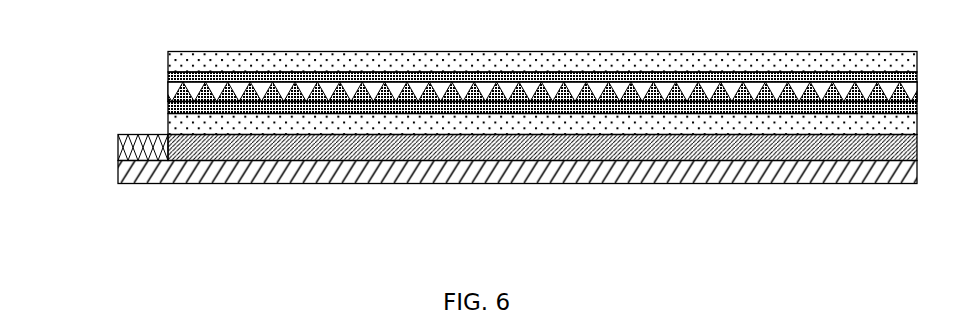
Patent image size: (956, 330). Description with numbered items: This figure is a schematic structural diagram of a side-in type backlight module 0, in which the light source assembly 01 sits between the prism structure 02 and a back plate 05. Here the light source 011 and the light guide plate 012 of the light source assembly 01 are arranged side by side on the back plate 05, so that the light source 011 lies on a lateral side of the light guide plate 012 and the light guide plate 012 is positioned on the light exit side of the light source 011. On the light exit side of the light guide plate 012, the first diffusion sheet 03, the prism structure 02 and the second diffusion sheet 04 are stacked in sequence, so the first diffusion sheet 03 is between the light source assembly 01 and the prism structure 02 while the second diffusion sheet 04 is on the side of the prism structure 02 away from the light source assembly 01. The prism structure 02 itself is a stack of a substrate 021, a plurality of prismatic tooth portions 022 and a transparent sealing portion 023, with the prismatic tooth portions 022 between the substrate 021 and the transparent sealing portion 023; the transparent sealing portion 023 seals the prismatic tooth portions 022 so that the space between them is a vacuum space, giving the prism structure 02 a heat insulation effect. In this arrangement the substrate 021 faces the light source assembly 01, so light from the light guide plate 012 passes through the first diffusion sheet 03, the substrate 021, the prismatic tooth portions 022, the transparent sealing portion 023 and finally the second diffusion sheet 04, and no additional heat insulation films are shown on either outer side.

The backlight module 0 is at (485, 145).
The light source assembly 01 is at (517, 199).
The light source 011 is at (146, 154).
The light guide plate 012 is at (193, 151).
The prism structure 02 is at (486, 87).
The substrate 021 is at (168, 107).
The prismatic tooth portions 022 is at (175, 93).
The transparent sealing portion 023 is at (168, 77).
The first diffusion sheet 03 is at (168, 126).
The second diffusion sheet 04 is at (168, 62).
The back plate 05 is at (121, 173).